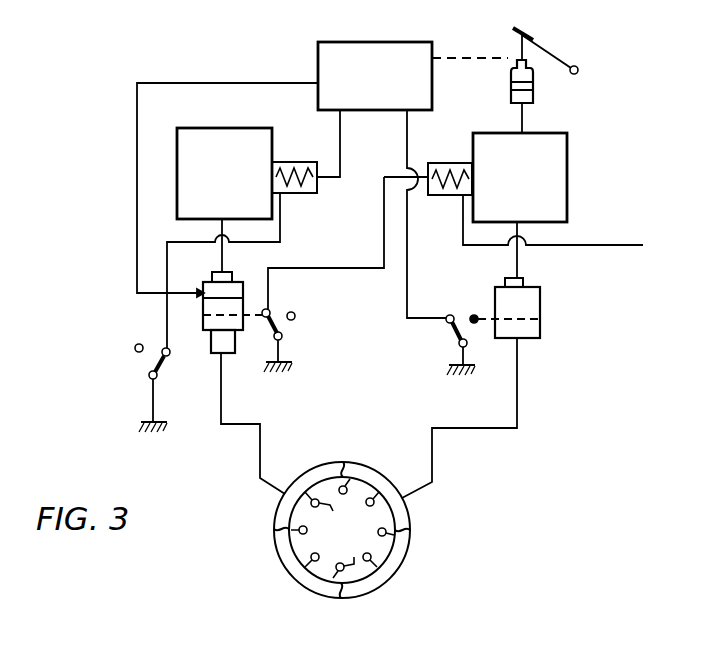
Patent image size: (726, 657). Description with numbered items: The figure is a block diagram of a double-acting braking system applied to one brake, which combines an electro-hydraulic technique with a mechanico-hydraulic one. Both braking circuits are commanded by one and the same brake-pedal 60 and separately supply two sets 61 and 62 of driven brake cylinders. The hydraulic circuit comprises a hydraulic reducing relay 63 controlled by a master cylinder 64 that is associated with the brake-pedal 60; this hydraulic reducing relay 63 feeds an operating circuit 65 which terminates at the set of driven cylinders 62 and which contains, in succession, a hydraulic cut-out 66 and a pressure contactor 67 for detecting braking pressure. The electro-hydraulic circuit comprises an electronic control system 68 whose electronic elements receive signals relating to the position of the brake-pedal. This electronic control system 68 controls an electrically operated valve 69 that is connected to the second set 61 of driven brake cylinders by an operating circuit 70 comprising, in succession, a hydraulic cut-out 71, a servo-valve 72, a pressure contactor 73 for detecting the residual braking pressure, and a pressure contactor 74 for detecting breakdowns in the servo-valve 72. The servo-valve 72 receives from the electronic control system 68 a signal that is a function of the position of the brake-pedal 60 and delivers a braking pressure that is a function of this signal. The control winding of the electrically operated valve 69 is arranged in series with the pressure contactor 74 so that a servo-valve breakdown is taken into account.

The brake-pedal 60 is at (534, 38).
The set of driven brake cylinders 61 is at (335, 506).
The set of driven brake cylinders 62 is at (349, 553).
The hydraulic reducing relay 63 is at (550, 157).
The master cylinder 64 is at (532, 85).
The operating circuit 65 is at (518, 258).
The hydraulic cut-out 66 is at (523, 281).
The pressure contactor 67 is at (528, 310).
The electronic control system 68 is at (332, 62).
The electrically operated valve 69 is at (223, 143).
The operating circuit 70 is at (223, 257).
The hydraulic cut-out 71 is at (212, 276).
The servo-valve 72 is at (243, 298).
The pressure contactor 73 is at (203, 298).
The pressure contactor 74 is at (150, 372).